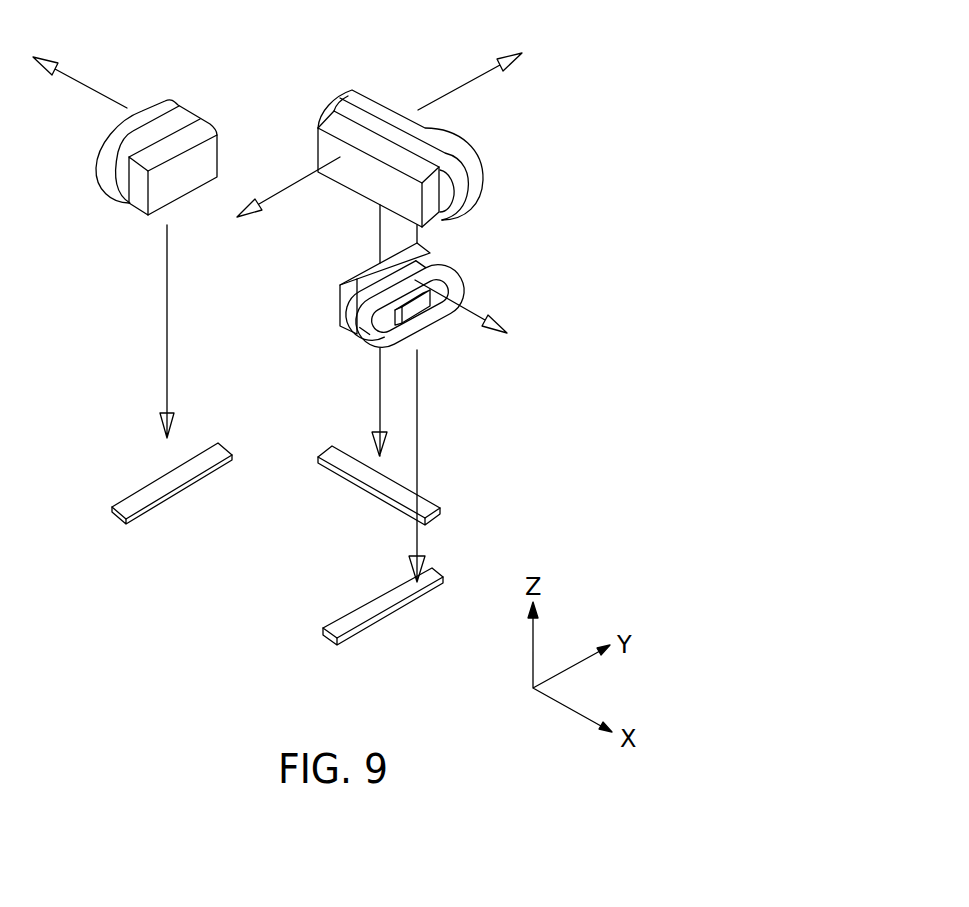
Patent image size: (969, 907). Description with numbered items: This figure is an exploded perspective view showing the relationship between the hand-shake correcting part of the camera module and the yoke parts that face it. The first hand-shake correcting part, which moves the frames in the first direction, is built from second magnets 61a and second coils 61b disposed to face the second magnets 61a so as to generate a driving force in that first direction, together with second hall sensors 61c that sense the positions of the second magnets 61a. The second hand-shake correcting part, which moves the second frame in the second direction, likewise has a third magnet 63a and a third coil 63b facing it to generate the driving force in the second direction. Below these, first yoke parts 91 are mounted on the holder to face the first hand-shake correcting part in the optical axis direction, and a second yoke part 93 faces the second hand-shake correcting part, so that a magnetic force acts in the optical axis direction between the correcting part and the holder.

The second magnet 61a is at (202, 157).
The second coil 61b is at (152, 117).
The second hall sensor 61c is at (430, 302).
The third magnet 63a is at (352, 165).
The third coil 63b is at (398, 120).
The first yoke part 91 is at (157, 490).
The second yoke part 93 is at (427, 508).